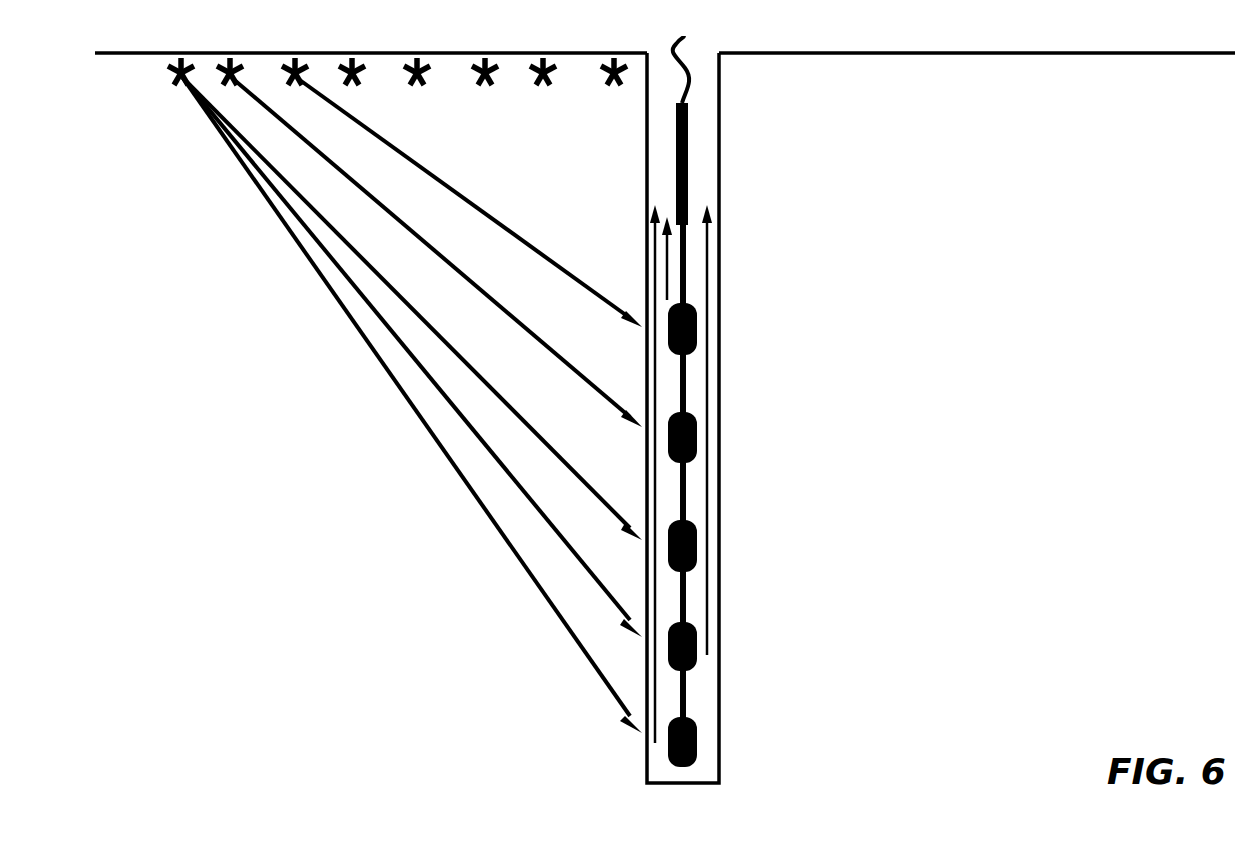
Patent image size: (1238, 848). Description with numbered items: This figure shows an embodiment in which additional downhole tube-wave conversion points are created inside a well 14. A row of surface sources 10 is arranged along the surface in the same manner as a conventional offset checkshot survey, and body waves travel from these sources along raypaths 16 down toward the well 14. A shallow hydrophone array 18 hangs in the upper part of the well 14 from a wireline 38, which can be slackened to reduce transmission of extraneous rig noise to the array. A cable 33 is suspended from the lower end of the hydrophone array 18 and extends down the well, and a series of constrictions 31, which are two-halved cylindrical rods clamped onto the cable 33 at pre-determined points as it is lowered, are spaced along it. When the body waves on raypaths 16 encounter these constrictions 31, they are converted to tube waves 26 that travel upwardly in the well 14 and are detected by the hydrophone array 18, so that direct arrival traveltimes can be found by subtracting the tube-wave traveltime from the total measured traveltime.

The surface sources 10 is at (298, 53).
The well 14 is at (647, 147).
The raypaths 16 is at (438, 180).
The hydrophone array 18 is at (690, 151).
The tube waves 26 is at (667, 273).
The constrictions 31 is at (695, 558).
The cable 33 is at (687, 386).
The wireline 38 is at (686, 38).